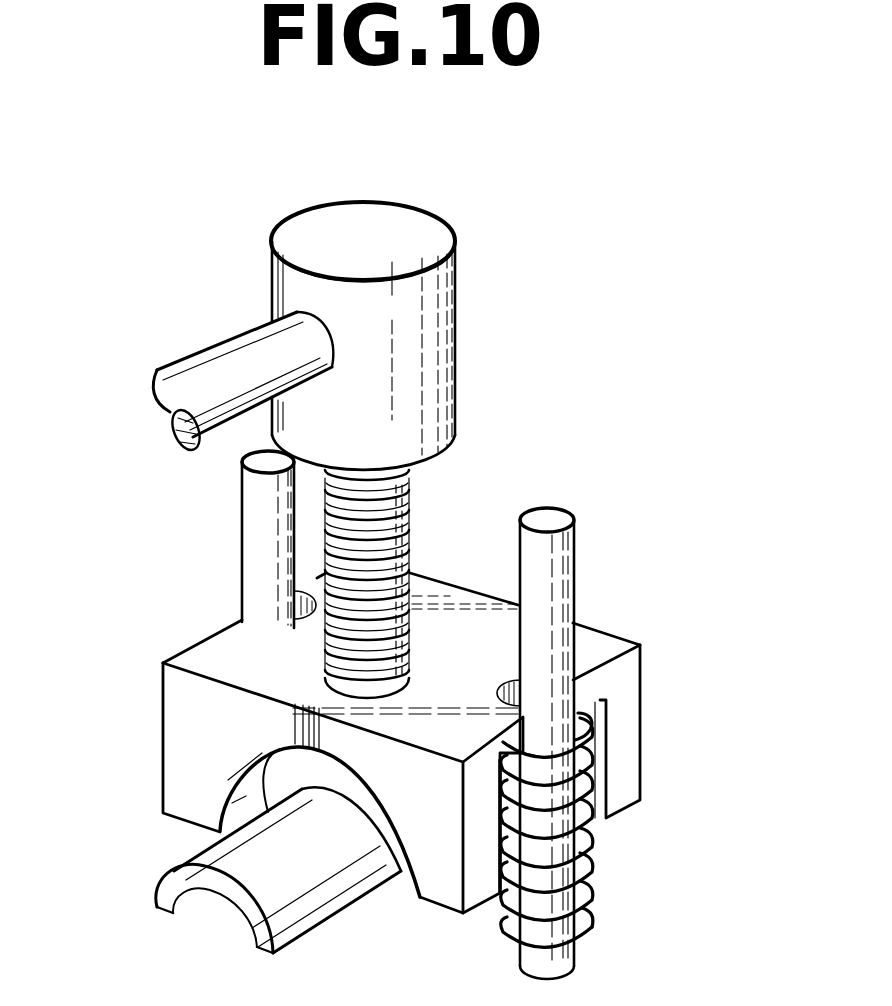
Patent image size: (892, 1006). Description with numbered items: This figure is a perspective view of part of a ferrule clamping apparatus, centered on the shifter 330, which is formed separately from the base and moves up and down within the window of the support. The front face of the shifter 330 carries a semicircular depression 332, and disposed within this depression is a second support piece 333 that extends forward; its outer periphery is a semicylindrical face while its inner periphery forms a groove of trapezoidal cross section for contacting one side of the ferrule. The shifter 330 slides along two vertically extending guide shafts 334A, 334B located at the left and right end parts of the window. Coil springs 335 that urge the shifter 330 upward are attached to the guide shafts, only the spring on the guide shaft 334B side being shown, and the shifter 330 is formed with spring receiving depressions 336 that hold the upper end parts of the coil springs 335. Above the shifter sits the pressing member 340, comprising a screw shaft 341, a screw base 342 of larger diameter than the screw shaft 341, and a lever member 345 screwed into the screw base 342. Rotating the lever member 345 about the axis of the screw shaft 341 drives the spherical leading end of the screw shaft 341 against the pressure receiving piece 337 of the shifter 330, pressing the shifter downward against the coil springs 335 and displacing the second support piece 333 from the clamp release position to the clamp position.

The shifter 330 is at (206, 705).
The semicircular depression 332 is at (377, 807).
The second support piece 333 is at (172, 898).
The guide shaft 334A is at (262, 525).
The guide shaft 334B is at (553, 562).
The coil spring 335 is at (588, 912).
The spring receiving depression 336 is at (603, 787).
The pressure receiving piece 337 is at (240, 724).
The pressing member 340 is at (200, 314).
The screw shaft 341 is at (413, 518).
The screw base 342 is at (415, 322).
The lever member 345 is at (192, 380).